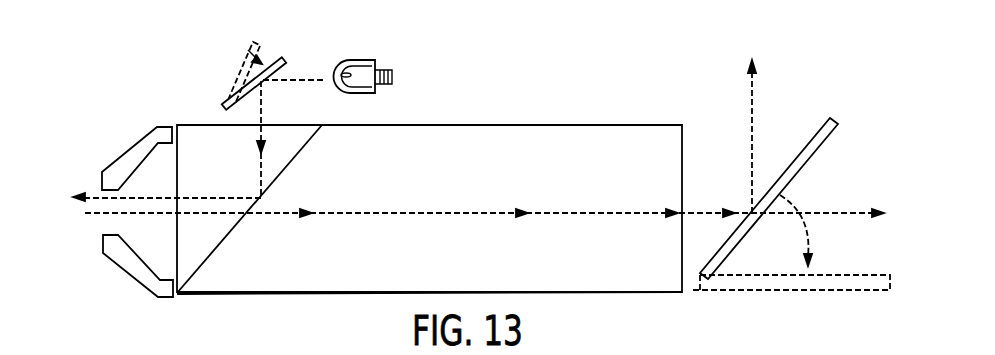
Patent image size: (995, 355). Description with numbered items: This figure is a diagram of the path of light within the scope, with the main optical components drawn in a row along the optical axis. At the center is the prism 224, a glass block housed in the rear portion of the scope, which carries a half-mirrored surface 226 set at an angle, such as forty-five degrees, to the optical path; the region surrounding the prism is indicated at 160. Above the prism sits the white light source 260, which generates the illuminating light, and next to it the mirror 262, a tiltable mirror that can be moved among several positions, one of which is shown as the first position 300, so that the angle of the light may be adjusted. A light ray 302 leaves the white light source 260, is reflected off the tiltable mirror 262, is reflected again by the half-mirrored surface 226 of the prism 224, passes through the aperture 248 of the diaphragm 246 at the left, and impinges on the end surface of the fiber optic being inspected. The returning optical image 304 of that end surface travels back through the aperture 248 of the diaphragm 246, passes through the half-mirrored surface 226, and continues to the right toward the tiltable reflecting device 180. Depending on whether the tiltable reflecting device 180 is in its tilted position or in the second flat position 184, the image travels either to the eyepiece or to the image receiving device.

The beam splitter cube housing 160 is at (498, 114).
The tiltable reflecting device 180 is at (813, 147).
The second flat position 184 is at (762, 290).
The prism 224 is at (388, 292).
The half-mirrored surface 226 is at (232, 230).
The diaphragm 246 is at (132, 155).
The aperture 248 is at (110, 205).
The white light source 260 is at (355, 62).
The mirror 262 is at (268, 68).
The first position 300 is at (236, 75).
The light ray 302 is at (310, 80).
The optical image 304 is at (136, 215).